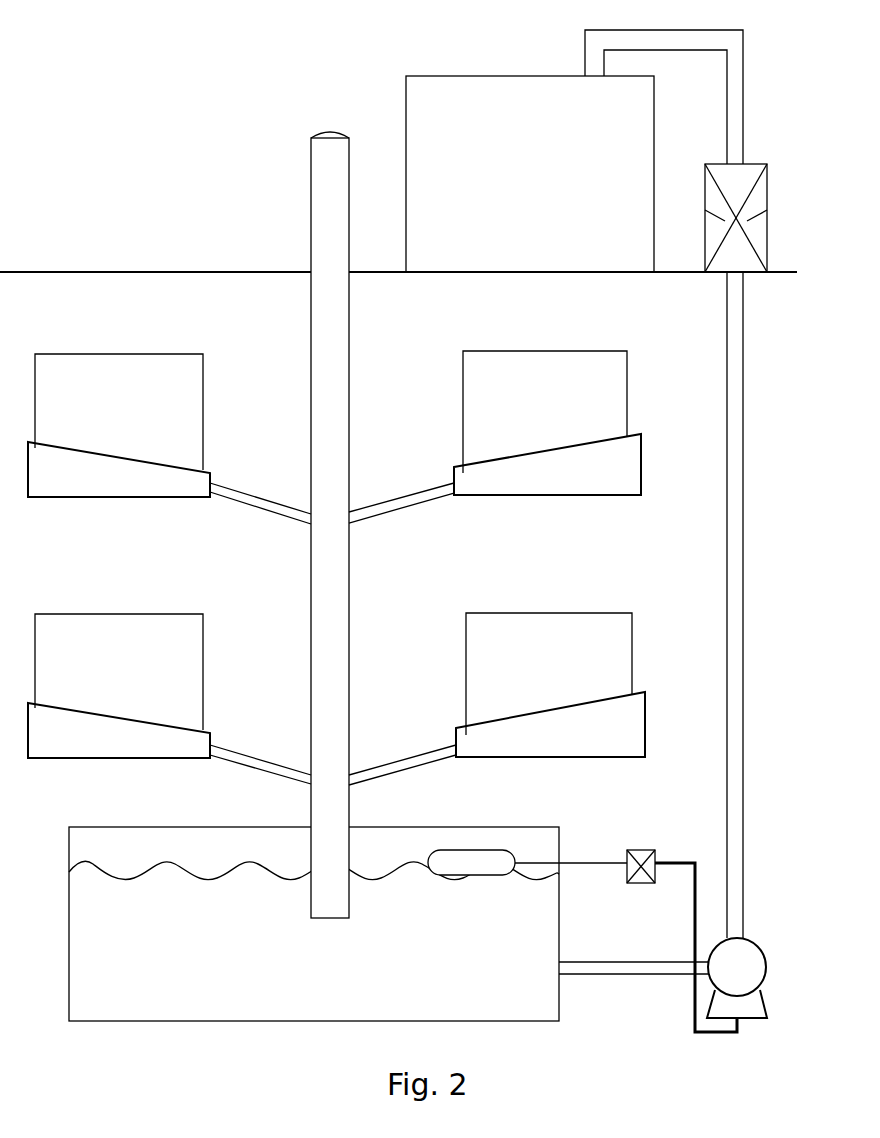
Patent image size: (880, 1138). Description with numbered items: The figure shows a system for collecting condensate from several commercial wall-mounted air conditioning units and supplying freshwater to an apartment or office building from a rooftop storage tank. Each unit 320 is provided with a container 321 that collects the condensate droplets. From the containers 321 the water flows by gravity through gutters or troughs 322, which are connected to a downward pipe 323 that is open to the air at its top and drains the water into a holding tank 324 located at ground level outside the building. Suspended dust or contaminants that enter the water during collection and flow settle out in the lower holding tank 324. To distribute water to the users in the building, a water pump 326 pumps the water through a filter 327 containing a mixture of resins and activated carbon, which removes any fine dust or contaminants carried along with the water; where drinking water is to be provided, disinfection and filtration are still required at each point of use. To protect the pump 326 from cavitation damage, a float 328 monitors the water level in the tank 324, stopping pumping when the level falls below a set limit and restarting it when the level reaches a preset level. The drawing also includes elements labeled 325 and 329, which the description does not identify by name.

The unit 320 is at (428, 424).
The container 321 is at (428, 685).
The gutters or troughs 322 is at (516, 634).
The downward pipe 323 is at (398, 525).
The holding tank 324 is at (449, 911).
The drive motor housing 325 is at (399, 174).
The water pump 326 is at (775, 977).
The filter 327 is at (721, 484).
The float 328 is at (630, 852).
The valve 329 is at (729, 941).